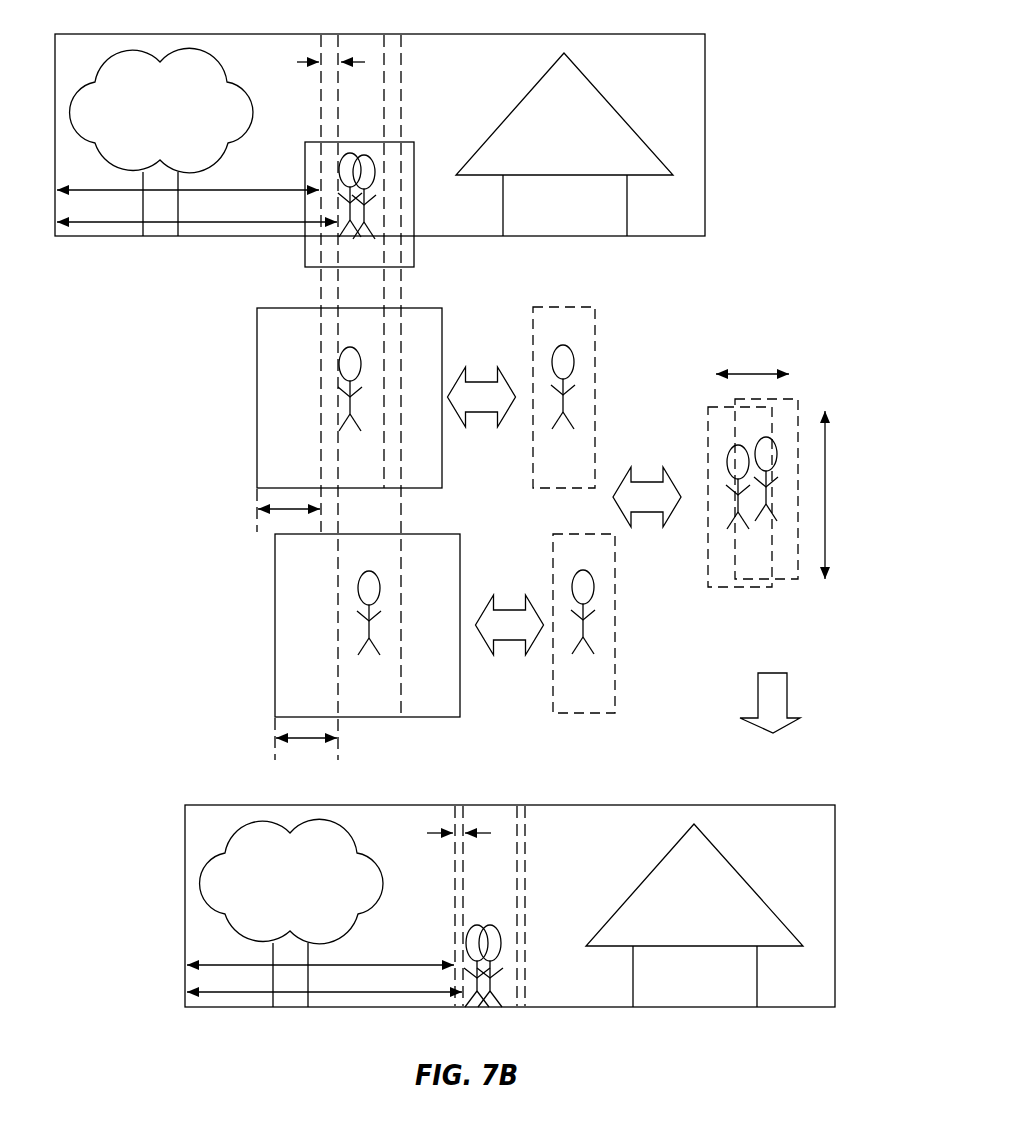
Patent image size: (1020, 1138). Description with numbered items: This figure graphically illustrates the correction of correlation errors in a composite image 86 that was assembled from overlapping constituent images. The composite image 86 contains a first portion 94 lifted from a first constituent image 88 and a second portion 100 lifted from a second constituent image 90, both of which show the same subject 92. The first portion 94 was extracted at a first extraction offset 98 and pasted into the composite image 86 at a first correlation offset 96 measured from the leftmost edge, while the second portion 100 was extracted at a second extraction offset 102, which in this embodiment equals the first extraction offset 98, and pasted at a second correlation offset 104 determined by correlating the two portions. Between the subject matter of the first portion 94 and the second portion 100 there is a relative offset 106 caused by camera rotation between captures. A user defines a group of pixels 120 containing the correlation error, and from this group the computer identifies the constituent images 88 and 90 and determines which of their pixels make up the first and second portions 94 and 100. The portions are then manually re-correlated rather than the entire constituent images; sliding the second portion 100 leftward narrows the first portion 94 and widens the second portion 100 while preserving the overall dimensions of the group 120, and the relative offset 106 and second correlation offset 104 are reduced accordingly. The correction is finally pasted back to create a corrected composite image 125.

The composite image 86 is at (705, 100).
The first constituent image 88 is at (257, 385).
The second constituent image 90 is at (275, 583).
The subject 92 is at (345, 350).
The first portion 94 is at (372, 340).
The first correlation offset 96 is at (281, 188).
The first extraction offset 98 is at (276, 512).
The second portion 100 is at (378, 548).
The second extraction offset 102 is at (299, 742).
The second correlation offset 104 is at (257, 224).
The relative offset 106 is at (330, 50).
The group of pixels 120 is at (370, 142).
The corrected composite image 125 is at (703, 805).